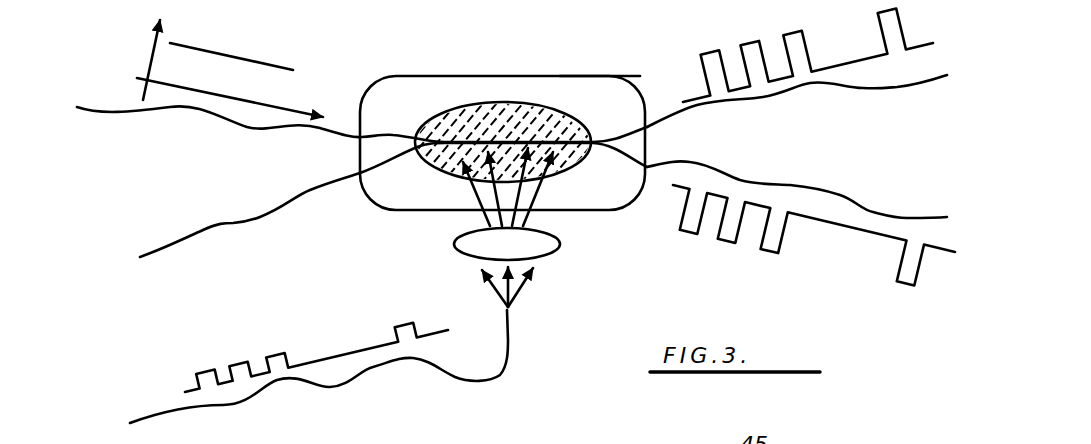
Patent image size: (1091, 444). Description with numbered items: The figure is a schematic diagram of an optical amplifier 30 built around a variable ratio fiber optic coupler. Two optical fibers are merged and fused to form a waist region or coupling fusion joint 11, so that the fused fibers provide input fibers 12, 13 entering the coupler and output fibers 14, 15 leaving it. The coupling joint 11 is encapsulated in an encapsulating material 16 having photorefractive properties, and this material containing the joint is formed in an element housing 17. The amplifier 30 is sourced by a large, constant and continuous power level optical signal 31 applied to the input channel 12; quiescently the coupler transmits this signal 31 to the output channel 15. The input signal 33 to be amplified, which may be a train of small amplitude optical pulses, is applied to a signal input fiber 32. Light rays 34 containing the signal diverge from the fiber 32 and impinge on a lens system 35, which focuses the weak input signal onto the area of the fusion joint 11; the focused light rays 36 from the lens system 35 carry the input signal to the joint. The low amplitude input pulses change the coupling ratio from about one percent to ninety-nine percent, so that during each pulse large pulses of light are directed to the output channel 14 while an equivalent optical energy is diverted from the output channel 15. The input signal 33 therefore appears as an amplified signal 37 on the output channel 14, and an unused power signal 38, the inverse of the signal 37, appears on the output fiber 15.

The coupling fusion joint 11 is at (465, 143).
The input fiber 12 is at (170, 108).
The input fiber 13 is at (260, 217).
The output fiber 14 is at (750, 105).
The output fiber 15 is at (867, 205).
The encapsulating material 16 is at (520, 107).
The element housing 17 is at (578, 76).
The optical amplifier 30 is at (419, 72).
The optical signal 31 is at (260, 63).
The signal input fiber 32 is at (148, 417).
The input signal 33 is at (287, 353).
The light rays 34 is at (534, 287).
The lens system 35 is at (452, 245).
The light rays 36 is at (542, 217).
The amplified signal 37 is at (702, 60).
The unused power signal 38 is at (898, 268).